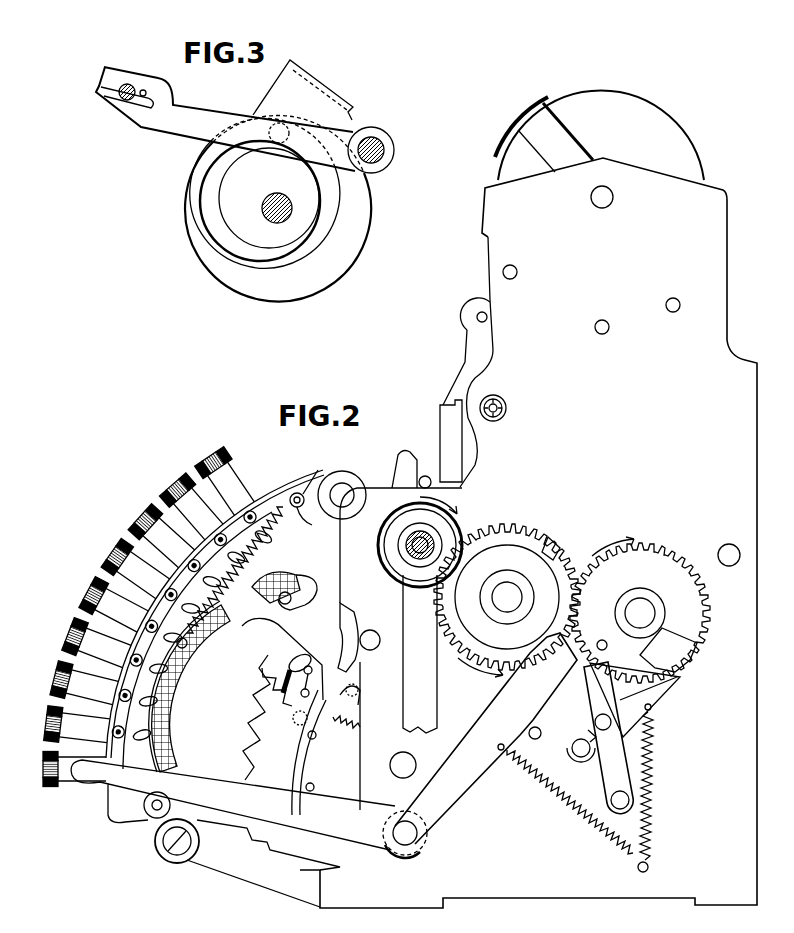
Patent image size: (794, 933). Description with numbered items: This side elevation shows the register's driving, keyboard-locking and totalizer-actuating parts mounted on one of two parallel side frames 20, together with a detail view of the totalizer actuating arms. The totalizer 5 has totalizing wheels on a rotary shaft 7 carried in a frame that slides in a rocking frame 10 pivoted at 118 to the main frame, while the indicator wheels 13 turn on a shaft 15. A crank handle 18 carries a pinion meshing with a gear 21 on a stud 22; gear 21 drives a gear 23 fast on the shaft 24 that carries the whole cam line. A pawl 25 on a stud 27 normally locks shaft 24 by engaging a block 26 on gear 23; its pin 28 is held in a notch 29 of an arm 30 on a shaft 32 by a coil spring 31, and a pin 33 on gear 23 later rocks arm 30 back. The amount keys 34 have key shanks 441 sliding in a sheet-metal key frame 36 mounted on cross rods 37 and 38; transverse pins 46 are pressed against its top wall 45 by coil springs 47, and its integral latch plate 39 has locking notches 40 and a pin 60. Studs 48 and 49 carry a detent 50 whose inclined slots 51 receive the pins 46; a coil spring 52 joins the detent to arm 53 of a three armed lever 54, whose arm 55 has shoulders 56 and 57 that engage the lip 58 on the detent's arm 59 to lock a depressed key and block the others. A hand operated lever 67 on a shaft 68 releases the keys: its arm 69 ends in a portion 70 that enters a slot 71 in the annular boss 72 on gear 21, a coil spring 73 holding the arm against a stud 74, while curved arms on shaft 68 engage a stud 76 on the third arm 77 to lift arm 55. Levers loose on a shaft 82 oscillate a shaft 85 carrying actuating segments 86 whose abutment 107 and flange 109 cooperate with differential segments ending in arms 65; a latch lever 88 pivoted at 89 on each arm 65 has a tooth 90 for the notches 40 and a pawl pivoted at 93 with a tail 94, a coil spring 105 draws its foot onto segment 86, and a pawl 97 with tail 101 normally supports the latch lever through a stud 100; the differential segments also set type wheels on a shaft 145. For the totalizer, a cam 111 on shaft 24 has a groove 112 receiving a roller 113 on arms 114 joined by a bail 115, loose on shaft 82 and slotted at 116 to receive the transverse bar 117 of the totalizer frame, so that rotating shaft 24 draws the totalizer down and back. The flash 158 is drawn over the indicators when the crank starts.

In FIG. 2, the totalizer 5 is at (446, 421).
In FIG. 2, the rotary shaft 7 is at (504, 405).
In FIG. 2, the rocking frame 10 is at (470, 347).
In FIG. 2, the indicator wheels 13 is at (634, 112).
In FIG. 2, the shaft 15 is at (607, 196).
In FIG. 2, the crank handle 18 is at (433, 683).
In FIG. 2, the side frames 20 is at (718, 356).
In FIG. 2, the gear 21 is at (549, 538).
In FIG. 2, the stud 22 is at (503, 588).
In FIG. 2, the gear 23 is at (663, 557).
In FIG. 3, the shaft 24 is at (268, 201).
In FIG. 2, the shaft 24 is at (662, 580).
In FIG. 2, the pawl 25 is at (664, 694).
In FIG. 2, the block 26 is at (686, 657).
In FIG. 2, the stud 27 is at (578, 746).
In FIG. 2, the pin 28 is at (600, 718).
In FIG. 2, the notch 29 is at (593, 737).
In FIG. 2, the arm 30 is at (604, 773).
In FIG. 2, the coil spring 31 is at (655, 797).
In FIG. 2, the shaft 32 is at (612, 796).
In FIG. 2, the pin 33 is at (603, 641).
In FIG. 2, the amount keys 34 is at (212, 449).
In FIG. 2, the key frame 36 is at (312, 483).
In FIG. 2, the cross rod 37 is at (343, 487).
In FIG. 2, the cross rod 38 is at (178, 856).
In FIG. 2, the latch plate 39 is at (250, 715).
In FIG. 2, the locking notches 40 is at (243, 748).
In FIG. 2, the top wall 45 is at (110, 800).
In FIG. 2, the transverse pins 46 is at (250, 497).
In FIG. 2, the coil springs 47 is at (200, 688).
In FIG. 2, the stud 48 is at (339, 557).
In FIG. 2, the stud 49 is at (155, 812).
In FIG. 2, the detent 50 is at (160, 748).
In FIG. 2, the inclined slots 51 is at (145, 690).
In FIG. 2, the coil spring 52 is at (263, 543).
In FIG. 2, the arm 53 is at (303, 494).
In FIG. 2, the three armed lever 54 is at (330, 533).
In FIG. 2, the arm 55 is at (275, 640).
In FIG. 2, the shoulder 56 is at (262, 636).
In FIG. 2, the shoulder 57 is at (248, 632).
In FIG. 2, the lip 58 is at (245, 661).
In FIG. 2, the arm 59 is at (205, 672).
In FIG. 2, the pin 60 is at (289, 596).
In FIG. 2, the arms 65 is at (360, 722).
In FIG. 2, the hand operated lever 67 is at (207, 808).
In FIG. 2, the shaft 68 is at (418, 838).
In FIG. 2, the arm 69 is at (472, 781).
In FIG. 2, the portion 70 is at (548, 664).
In FIG. 2, the slot 71 is at (560, 560).
In FIG. 2, the annular boss 72 is at (547, 548).
In FIG. 2, the coil spring 73 is at (570, 800).
In FIG. 2, the stud 74 is at (536, 740).
In FIG. 2, the stud 76 is at (360, 700).
In FIG. 2, the third arm 77 is at (358, 668).
In FIG. 3, the shaft 82 is at (386, 154).
In FIG. 2, the shaft 82 is at (728, 543).
In FIG. 2, the shaft 85 is at (414, 760).
In FIG. 2, the actuating segments 86 is at (292, 768).
In FIG. 2, the latch lever 88 is at (293, 722).
In FIG. 2, the pivot 89 is at (378, 621).
In FIG. 2, the tooth 90 is at (277, 691).
In FIG. 2, the pivot 93 is at (353, 610).
In FIG. 2, the tail 94 is at (338, 637).
In FIG. 2, the pawl 97 is at (309, 680).
In FIG. 2, the stud 100 is at (298, 672).
In FIG. 2, the tail 101 is at (364, 686).
In FIG. 2, the coil spring 105 is at (345, 731).
In FIG. 2, the abutment 107 is at (312, 782).
In FIG. 2, the outstanding flange 109 is at (312, 765).
In FIG. 3, the cam 111 is at (358, 242).
In FIG. 3, the cam groove 112 is at (335, 213).
In FIG. 3, the anti-friction roller 113 is at (268, 127).
In FIG. 3, the arms 114 is at (342, 130).
In FIG. 3, the bail 115 is at (335, 90).
In FIG. 3, the slot 116 is at (144, 91).
In FIG. 3, the transverse bar 117 is at (128, 86).
In FIG. 2, the pivot 118 is at (481, 311).
In FIG. 2, the shaft 145 is at (381, 639).
In FIG. 2, the flash 158 is at (531, 105).
In FIG. 2, the key shanks 441 is at (233, 482).